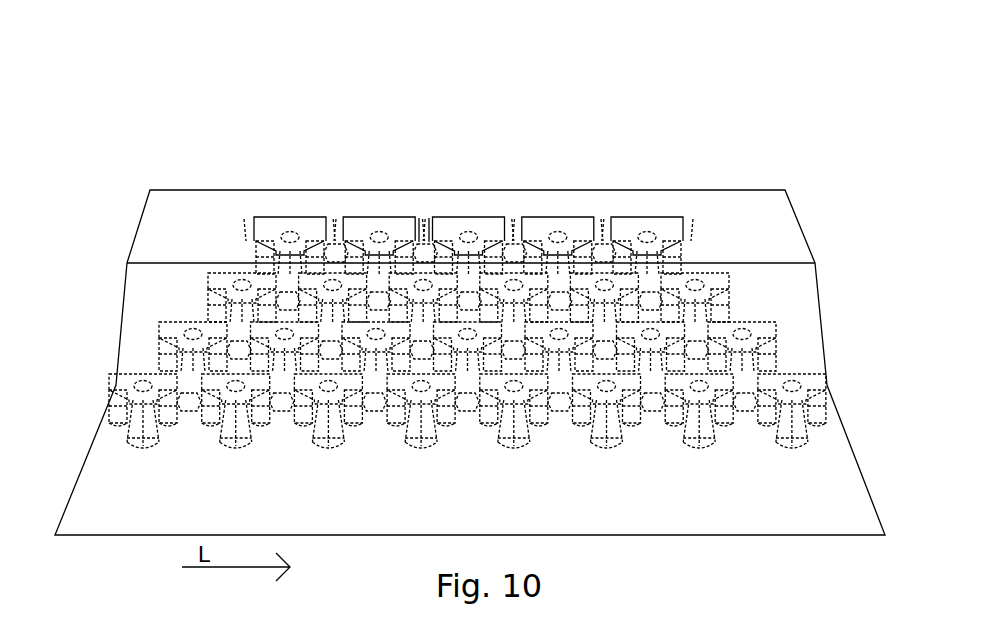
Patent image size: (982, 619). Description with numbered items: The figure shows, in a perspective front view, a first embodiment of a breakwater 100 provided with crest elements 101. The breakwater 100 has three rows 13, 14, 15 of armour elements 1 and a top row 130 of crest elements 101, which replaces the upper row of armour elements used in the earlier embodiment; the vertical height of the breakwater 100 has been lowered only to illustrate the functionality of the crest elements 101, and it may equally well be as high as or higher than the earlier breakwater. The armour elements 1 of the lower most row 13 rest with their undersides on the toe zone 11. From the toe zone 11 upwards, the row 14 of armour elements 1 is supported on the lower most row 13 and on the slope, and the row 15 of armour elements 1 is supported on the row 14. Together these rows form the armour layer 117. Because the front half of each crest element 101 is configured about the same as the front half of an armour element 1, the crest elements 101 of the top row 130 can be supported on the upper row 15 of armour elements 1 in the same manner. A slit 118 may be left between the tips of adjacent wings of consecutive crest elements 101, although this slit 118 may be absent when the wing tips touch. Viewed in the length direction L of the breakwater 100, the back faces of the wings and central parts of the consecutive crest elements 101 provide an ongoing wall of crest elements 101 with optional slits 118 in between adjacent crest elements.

The breakwater 100 is at (708, 118).
The crest element 101 is at (652, 222).
The toe zone 11 is at (835, 490).
The armour layer 117 is at (153, 223).
The slit 118 is at (434, 199).
The row of crest elements 130 is at (218, 248).
The row of armour elements 15 is at (168, 301).
The row of armour elements 14 is at (122, 350).
The lower most row 13 is at (73, 406).
The armour element 1 is at (522, 448).